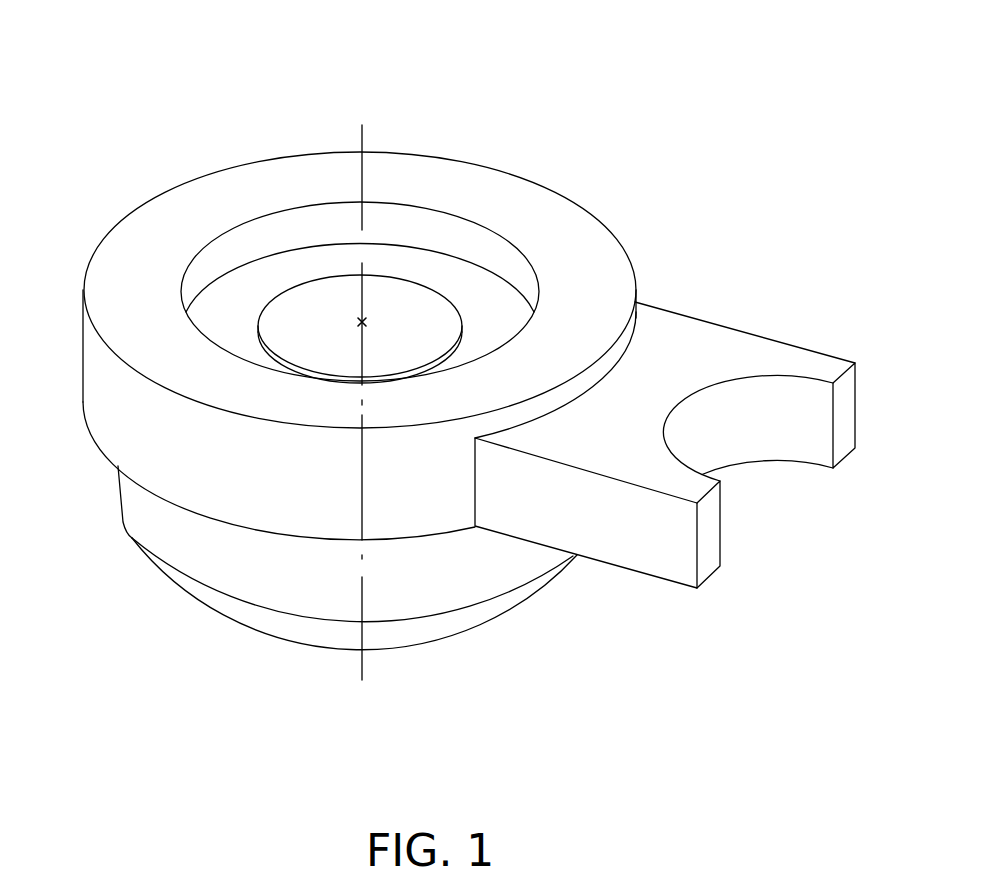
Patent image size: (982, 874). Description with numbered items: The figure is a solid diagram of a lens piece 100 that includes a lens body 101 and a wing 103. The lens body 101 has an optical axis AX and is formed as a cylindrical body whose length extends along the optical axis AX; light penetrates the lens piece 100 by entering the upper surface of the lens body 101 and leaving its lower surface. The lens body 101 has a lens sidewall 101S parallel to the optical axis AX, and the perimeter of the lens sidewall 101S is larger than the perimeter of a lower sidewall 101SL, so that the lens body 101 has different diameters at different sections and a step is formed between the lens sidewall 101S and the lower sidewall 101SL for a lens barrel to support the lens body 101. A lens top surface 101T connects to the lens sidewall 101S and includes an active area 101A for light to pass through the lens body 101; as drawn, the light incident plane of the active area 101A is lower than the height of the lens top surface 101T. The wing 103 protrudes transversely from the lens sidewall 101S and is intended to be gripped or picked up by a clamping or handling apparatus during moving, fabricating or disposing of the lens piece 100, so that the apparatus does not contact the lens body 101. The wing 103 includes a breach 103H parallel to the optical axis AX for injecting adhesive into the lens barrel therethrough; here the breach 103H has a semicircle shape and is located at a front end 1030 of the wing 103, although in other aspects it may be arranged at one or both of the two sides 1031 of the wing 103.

The lens piece 100 is at (130, 34).
The lens body 101 is at (623, 228).
The lens top surface 101T is at (253, 197).
The active area 101A is at (408, 310).
The lens sidewall 101S is at (188, 438).
The lower sidewall 101SL is at (198, 530).
The wing 103 is at (696, 302).
The sides of the wing 1031 is at (725, 322).
The front end of the wing 1030 is at (847, 447).
The breach 103H is at (743, 410).
The optical axis AX is at (354, 386).